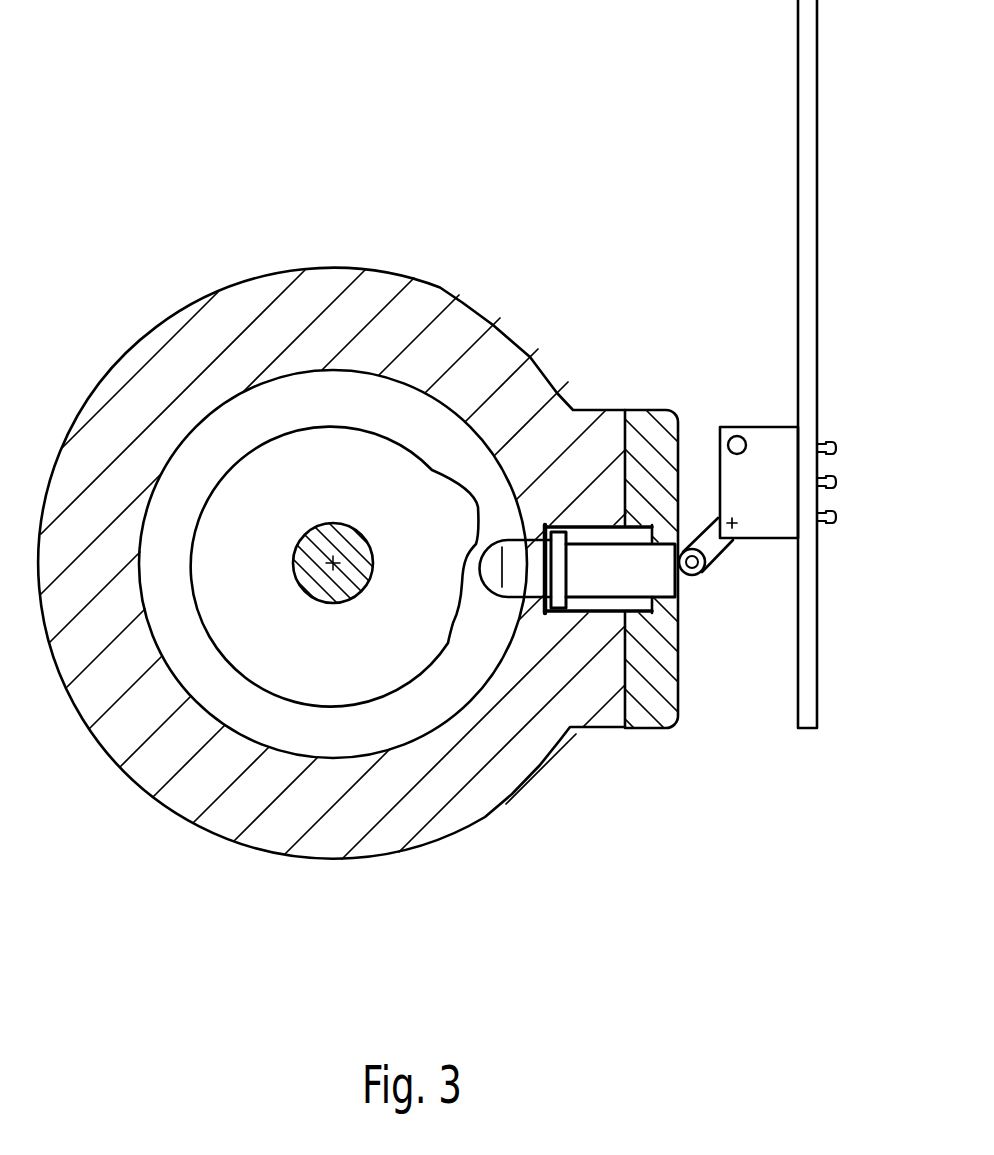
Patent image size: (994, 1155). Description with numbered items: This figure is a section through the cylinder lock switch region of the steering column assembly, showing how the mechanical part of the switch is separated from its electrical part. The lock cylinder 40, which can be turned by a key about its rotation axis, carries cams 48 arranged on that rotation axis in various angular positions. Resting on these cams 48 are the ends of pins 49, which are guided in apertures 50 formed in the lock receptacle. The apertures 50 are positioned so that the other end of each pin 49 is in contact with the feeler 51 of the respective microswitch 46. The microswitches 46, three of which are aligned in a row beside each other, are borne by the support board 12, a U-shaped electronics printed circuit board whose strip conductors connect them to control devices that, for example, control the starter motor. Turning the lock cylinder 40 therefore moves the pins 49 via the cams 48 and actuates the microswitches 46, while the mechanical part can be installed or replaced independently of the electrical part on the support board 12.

The support board 12 is at (808, 330).
The lock cylinder 40 is at (277, 330).
The microswitches 46 is at (765, 522).
The cams 48 is at (337, 457).
The pins 49 is at (633, 562).
The apertures 50 is at (596, 523).
The feeler 51 is at (705, 557).